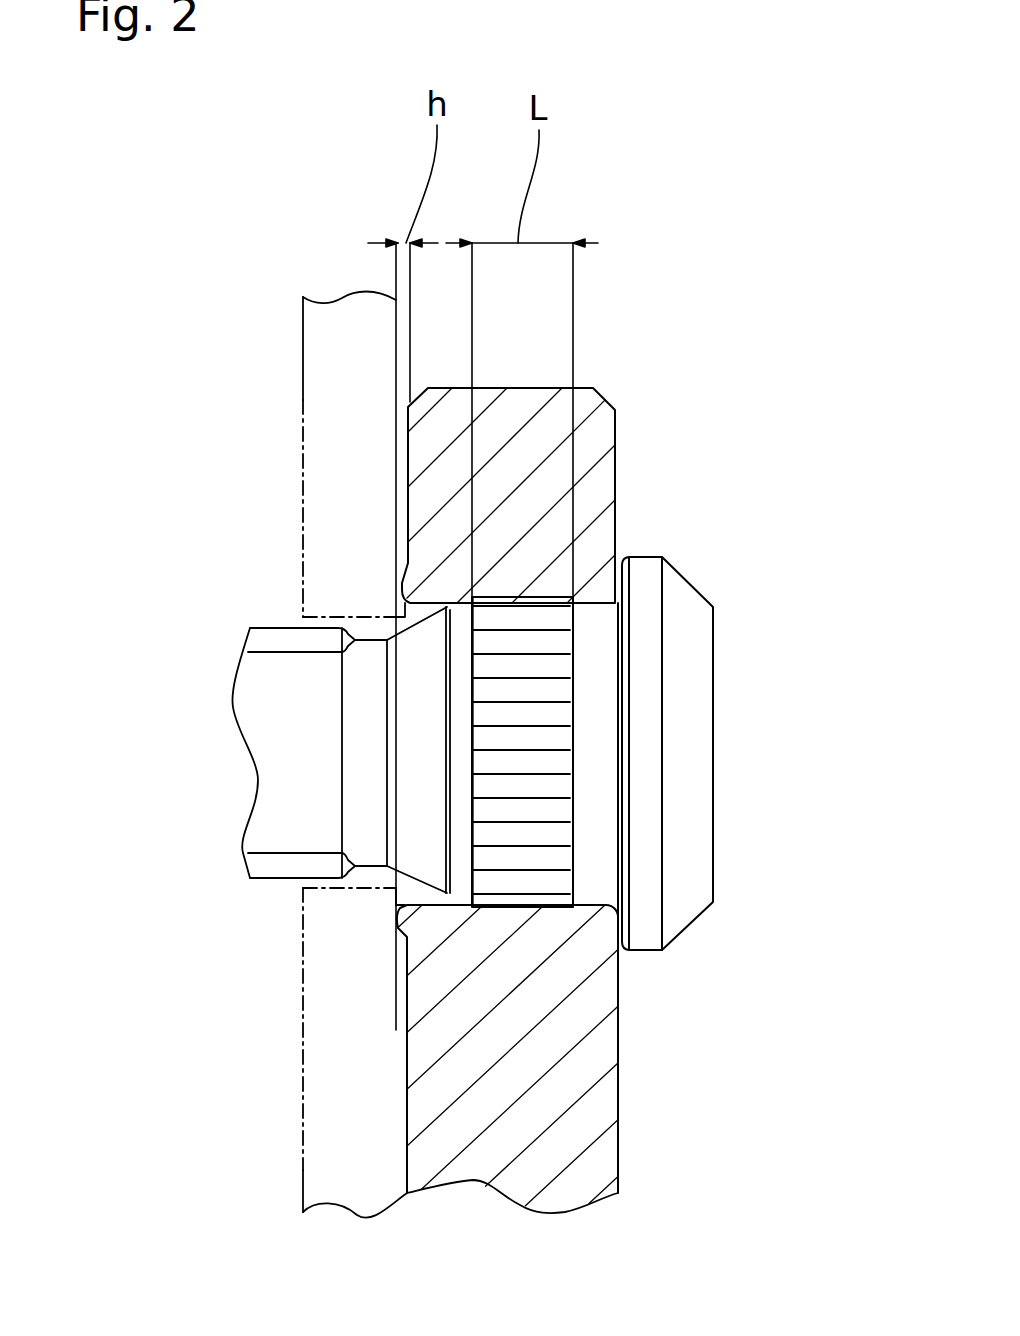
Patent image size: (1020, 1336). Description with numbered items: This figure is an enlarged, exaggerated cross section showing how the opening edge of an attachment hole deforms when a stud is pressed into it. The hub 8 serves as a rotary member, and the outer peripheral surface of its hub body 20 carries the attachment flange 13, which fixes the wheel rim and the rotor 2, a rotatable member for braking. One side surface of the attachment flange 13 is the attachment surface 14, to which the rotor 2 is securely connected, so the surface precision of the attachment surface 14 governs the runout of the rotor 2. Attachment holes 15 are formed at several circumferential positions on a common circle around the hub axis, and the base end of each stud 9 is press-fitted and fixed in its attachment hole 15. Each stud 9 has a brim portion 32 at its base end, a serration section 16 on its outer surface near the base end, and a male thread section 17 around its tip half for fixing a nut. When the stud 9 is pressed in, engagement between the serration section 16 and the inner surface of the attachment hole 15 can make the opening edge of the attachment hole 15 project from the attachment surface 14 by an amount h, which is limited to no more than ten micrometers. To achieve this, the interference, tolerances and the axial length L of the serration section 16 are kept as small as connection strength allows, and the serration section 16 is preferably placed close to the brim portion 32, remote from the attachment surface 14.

The rotor 2 is at (323, 402).
The hub 8 is at (593, 1071).
The stud 9 is at (268, 715).
The attachment flange 13 is at (527, 413).
The attachment surface 14 is at (400, 1113).
The attachment hole 15 is at (462, 897).
The serration section 16 is at (523, 643).
The male thread section 17 is at (270, 650).
The hub body 20 is at (555, 1148).
The brim portion 32 is at (687, 687).